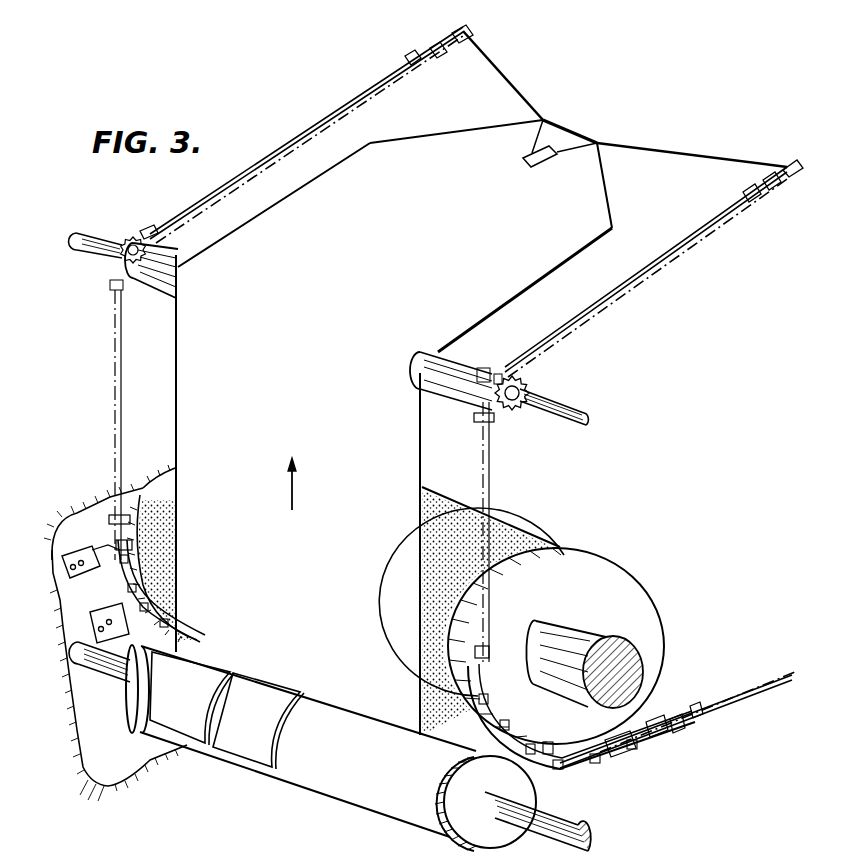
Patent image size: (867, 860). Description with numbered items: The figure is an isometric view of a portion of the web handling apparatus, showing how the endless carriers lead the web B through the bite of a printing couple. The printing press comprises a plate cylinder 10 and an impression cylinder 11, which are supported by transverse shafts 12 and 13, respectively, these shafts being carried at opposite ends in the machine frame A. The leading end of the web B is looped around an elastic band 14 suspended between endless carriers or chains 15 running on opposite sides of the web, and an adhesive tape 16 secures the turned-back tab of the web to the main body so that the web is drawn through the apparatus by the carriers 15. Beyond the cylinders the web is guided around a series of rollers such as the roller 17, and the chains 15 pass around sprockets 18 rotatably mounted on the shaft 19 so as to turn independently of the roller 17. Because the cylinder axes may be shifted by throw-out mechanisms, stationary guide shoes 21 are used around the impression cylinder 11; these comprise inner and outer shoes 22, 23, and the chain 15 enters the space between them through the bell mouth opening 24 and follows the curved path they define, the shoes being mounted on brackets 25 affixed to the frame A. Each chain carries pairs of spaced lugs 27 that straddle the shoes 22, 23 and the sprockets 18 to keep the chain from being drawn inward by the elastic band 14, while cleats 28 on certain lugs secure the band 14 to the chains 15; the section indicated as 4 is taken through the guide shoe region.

The plate cylinder 10 is at (334, 793).
The impression cylinder 11 is at (526, 522).
The transverse shaft 12 is at (567, 818).
The transverse shaft 13 is at (634, 650).
The elastic band 14 is at (513, 90).
The endless carrier 15 is at (428, 54).
The adhesive tape 16 is at (538, 166).
The roller 17 is at (472, 362).
The sprocket 18 is at (136, 232).
The shaft 19 is at (572, 407).
The guide shoe 21 is at (112, 598).
The inner shoe 22 is at (549, 744).
The outer shoe 23 is at (608, 760).
The bell mouth opening 24 is at (648, 710).
The bracket 25 is at (88, 548).
The lug 27 is at (678, 731).
The cleat 28 is at (469, 37).
The section line 4- 4 is at (136, 523).
The machine frame A is at (117, 768).
The web B is at (603, 212).